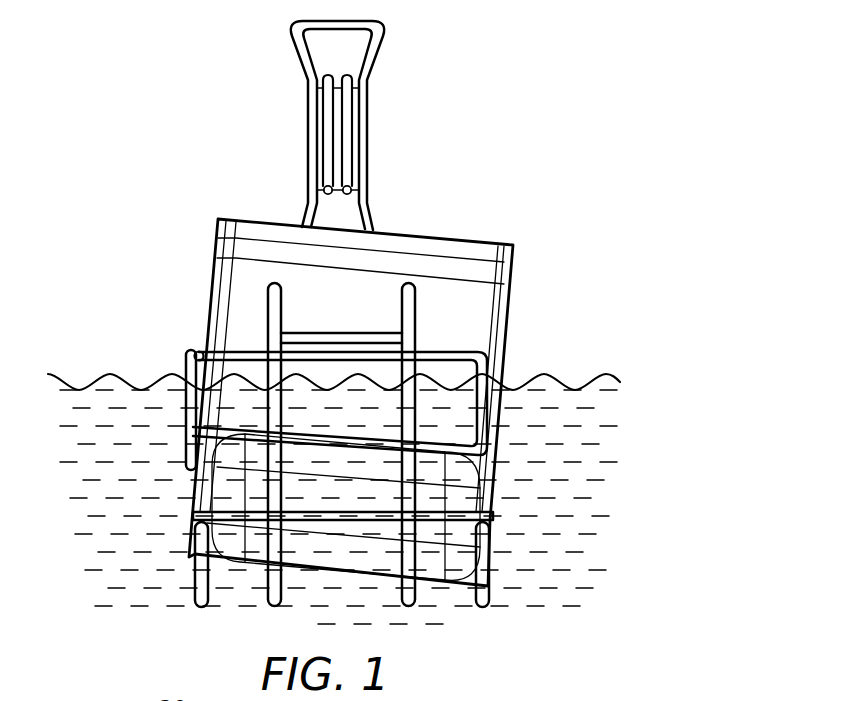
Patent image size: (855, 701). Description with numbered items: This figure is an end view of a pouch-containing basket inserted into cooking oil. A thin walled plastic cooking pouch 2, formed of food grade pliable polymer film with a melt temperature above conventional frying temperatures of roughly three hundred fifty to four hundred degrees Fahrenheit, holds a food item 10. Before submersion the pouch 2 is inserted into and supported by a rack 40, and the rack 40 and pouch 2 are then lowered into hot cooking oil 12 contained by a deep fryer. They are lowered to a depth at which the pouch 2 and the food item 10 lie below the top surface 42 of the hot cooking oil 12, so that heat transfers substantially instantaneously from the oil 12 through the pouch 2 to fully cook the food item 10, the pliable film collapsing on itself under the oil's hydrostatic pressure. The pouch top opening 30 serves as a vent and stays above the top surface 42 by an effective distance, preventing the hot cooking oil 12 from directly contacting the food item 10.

The thin walled plastic cooking pouch 2 is at (215, 250).
The food item 10 is at (362, 565).
The hot cooking oil 12 is at (125, 468).
The pouch top opening 30 is at (447, 240).
The rack 40 is at (367, 128).
The top surface 42 is at (185, 373).